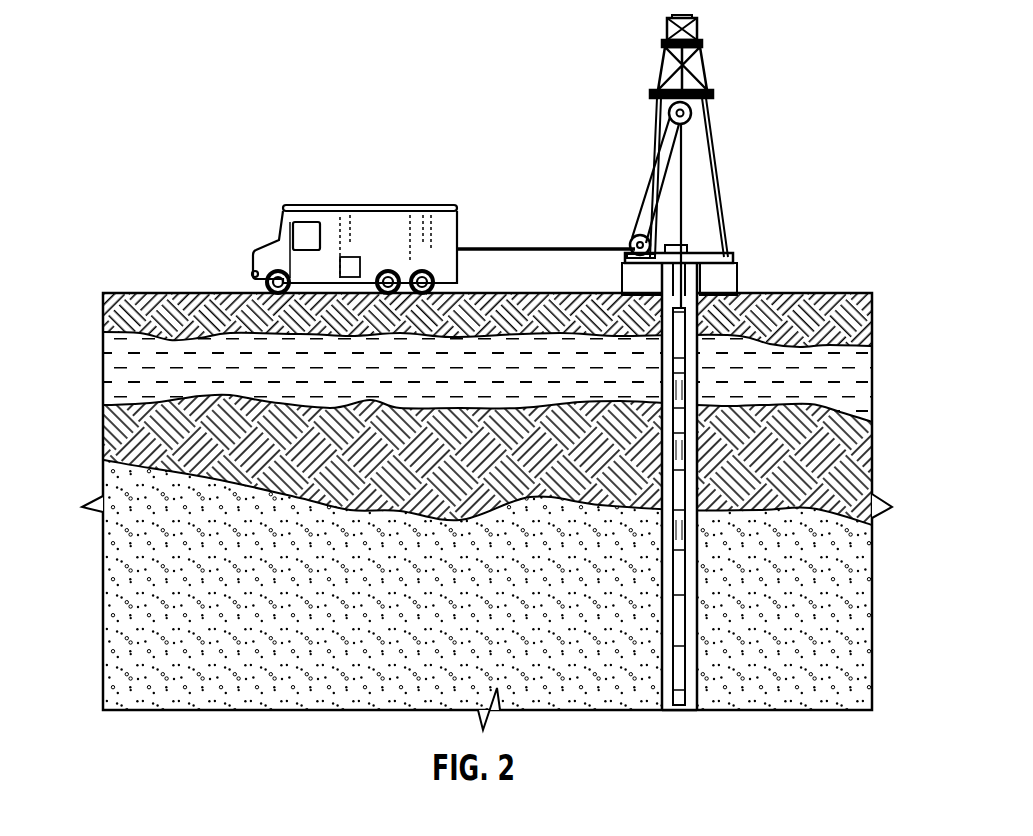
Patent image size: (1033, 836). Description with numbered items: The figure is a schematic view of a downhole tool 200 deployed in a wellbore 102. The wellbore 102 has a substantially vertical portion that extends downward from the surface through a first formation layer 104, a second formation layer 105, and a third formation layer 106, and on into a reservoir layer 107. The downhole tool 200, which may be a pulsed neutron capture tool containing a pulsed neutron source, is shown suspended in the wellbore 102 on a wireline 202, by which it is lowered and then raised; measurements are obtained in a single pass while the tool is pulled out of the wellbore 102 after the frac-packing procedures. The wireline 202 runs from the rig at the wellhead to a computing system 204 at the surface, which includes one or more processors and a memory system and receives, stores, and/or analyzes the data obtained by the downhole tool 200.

The wellbore 102 is at (688, 302).
The first formation layer 104 is at (103, 303).
The second formation layer 105 is at (118, 378).
The third formation layer 106 is at (115, 436).
The reservoir layer 107 is at (120, 610).
The downhole tool 200 is at (677, 687).
The wireline 202 is at (540, 248).
The computing system 204 is at (383, 222).